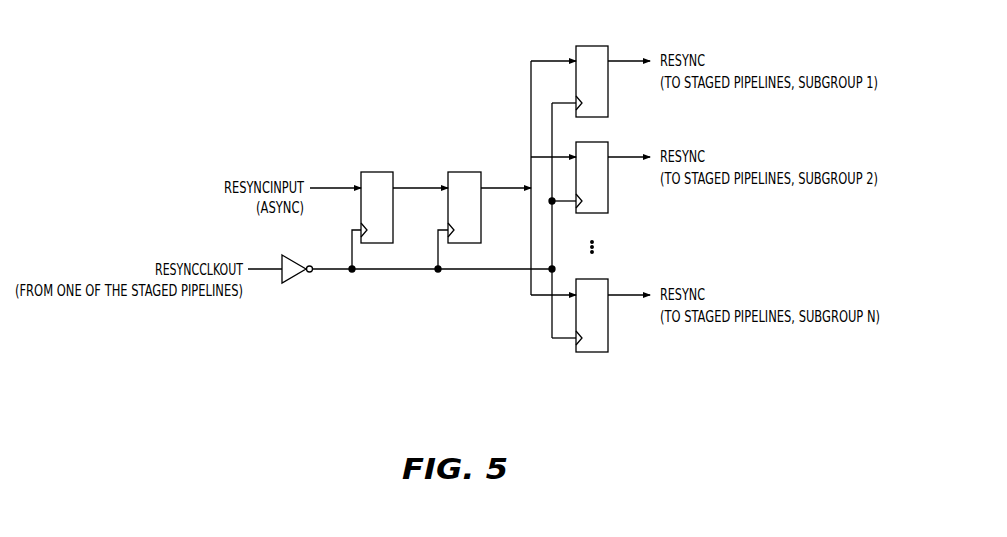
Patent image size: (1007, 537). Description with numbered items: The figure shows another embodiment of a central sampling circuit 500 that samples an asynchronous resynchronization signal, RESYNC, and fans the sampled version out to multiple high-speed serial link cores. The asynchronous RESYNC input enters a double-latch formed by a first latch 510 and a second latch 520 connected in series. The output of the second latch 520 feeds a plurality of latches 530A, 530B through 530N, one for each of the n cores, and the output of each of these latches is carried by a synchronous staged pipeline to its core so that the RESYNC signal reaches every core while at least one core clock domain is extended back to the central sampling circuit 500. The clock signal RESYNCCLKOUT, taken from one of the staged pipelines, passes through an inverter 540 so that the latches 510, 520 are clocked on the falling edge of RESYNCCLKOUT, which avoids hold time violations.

The central sampling circuit 500 is at (238, 30).
The first latch 510 is at (385, 177).
The second latch 520 is at (472, 177).
The latch 530A is at (602, 107).
The latch 530B is at (602, 203).
The latch 530N is at (602, 341).
The inverter 540 is at (285, 280).